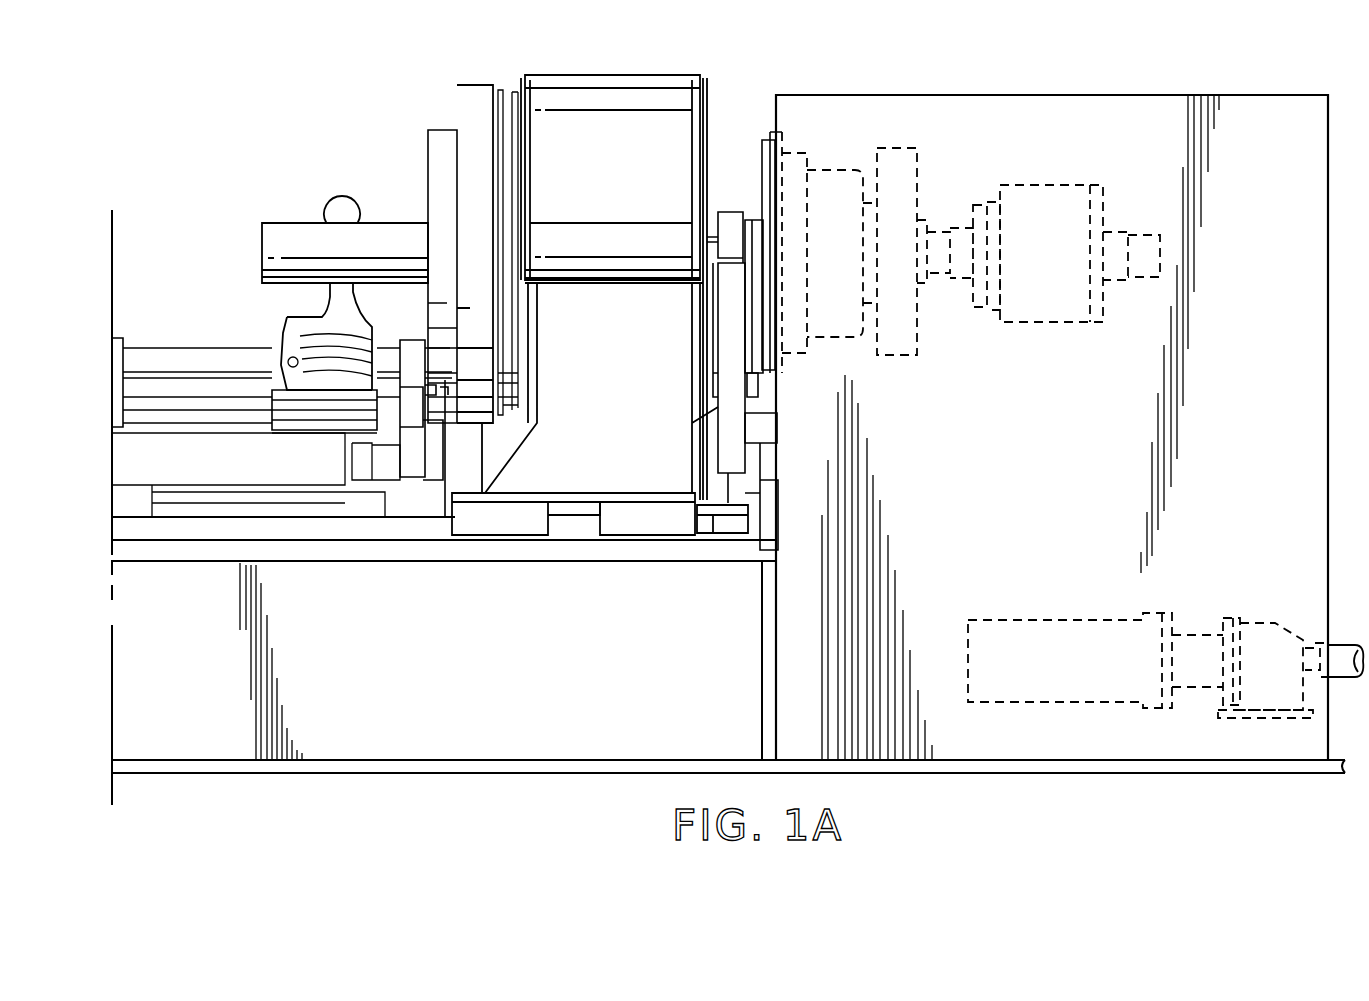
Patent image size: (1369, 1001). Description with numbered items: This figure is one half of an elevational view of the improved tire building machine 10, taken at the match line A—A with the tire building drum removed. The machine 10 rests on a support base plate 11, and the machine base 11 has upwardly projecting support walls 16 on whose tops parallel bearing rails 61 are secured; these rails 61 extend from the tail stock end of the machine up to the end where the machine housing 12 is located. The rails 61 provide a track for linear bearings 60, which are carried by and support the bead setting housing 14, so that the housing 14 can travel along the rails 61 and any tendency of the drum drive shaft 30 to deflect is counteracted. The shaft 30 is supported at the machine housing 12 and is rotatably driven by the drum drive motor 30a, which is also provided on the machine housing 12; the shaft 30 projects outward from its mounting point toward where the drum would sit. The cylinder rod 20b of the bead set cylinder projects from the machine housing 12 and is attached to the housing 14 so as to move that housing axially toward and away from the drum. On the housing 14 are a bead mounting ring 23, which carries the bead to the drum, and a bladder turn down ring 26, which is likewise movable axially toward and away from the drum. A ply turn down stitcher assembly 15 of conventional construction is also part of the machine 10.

The tire building machine 10 is at (277, 172).
The support base plate 11 is at (472, 765).
The machine housing 12 is at (1059, 95).
The bead setting housing 14 is at (628, 75).
The ply turn down stitcher assembly 15 is at (164, 340).
The support wall 16 is at (355, 740).
The cylinder rod 20b is at (768, 428).
The bead mounting ring 23 is at (487, 85).
The bladder turn down ring 26 is at (441, 133).
The drum drive shaft 30 is at (384, 223).
The drum drive motor 30a is at (1038, 310).
The linear bearing 60 is at (480, 525).
The bearing rail 61 is at (566, 520).